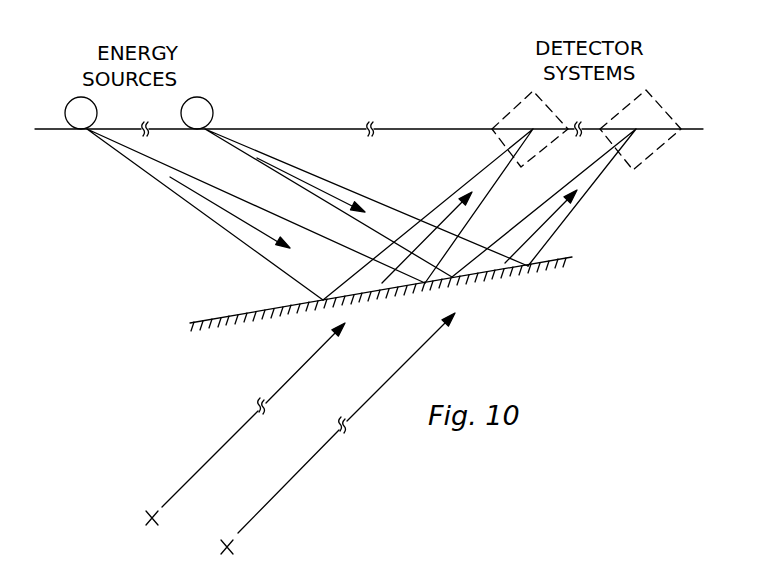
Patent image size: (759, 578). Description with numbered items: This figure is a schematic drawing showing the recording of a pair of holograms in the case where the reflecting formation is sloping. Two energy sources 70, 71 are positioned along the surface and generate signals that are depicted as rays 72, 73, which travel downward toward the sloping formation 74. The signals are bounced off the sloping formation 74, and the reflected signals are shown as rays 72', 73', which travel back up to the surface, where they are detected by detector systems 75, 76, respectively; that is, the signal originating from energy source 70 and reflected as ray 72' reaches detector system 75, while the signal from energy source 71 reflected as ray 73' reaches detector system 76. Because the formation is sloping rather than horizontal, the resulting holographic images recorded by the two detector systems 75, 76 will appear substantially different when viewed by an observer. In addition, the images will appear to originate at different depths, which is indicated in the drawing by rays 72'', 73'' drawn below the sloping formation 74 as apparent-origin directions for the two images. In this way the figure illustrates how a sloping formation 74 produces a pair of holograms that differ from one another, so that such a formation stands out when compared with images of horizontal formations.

The energy source 70 is at (75, 108).
The energy source 71 is at (202, 108).
The ray 72 is at (256, 214).
The ray 73 is at (366, 203).
The ray 72' is at (428, 214).
The ray 73' is at (544, 203).
The ray 72'' is at (245, 424).
The ray 73'' is at (338, 433).
The sloping formation 74 is at (538, 266).
The detector system 75 is at (525, 108).
The detector system 76 is at (650, 108).